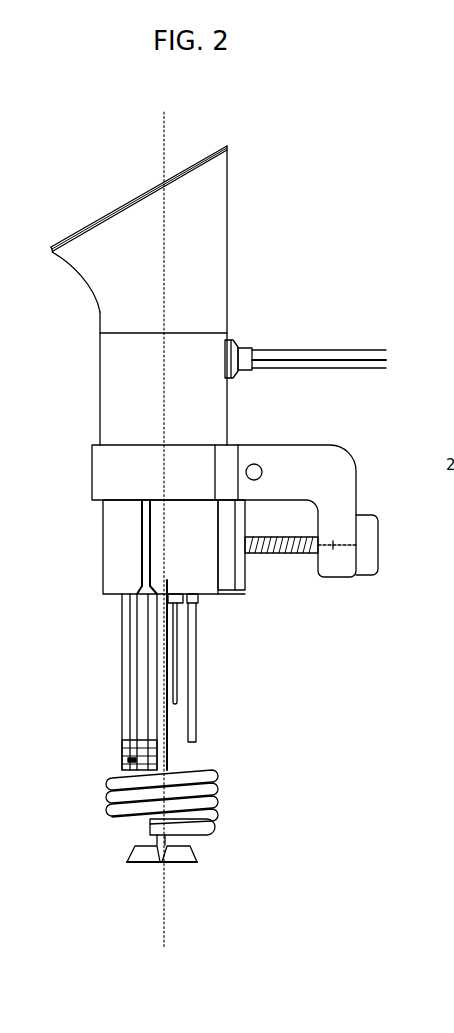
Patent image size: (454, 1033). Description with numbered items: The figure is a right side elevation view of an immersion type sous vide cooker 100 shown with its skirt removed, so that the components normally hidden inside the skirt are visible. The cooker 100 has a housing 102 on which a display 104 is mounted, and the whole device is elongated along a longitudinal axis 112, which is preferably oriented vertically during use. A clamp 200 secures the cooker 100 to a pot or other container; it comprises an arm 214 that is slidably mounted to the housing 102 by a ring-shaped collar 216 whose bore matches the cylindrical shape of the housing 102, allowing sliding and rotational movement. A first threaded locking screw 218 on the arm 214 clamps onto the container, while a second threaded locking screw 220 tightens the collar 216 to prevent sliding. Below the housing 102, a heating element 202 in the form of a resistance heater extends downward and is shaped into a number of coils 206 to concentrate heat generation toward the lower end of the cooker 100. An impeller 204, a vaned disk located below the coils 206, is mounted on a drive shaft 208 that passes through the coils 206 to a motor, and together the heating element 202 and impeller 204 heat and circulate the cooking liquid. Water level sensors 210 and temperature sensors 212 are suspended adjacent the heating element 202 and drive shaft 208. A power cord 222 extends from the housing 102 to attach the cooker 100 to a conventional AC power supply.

The sous vide cooker 100 is at (280, 166).
The housing 102 is at (116, 414).
The display 104 is at (120, 206).
The longitudinal axis 112 is at (164, 137).
The clamp 200 is at (355, 484).
The heating element 202 is at (125, 650).
The impeller 204 is at (195, 850).
The coils 206 is at (215, 795).
The drive shaft 208 is at (165, 755).
The water level sensors 210 is at (190, 685).
The temperature sensors 212 is at (135, 720).
The arm 214 is at (305, 465).
The collar 216 is at (104, 470).
The first threaded locking screw 218 is at (280, 553).
The second threaded locking screw 220 is at (258, 463).
The power cord 222 is at (295, 347).